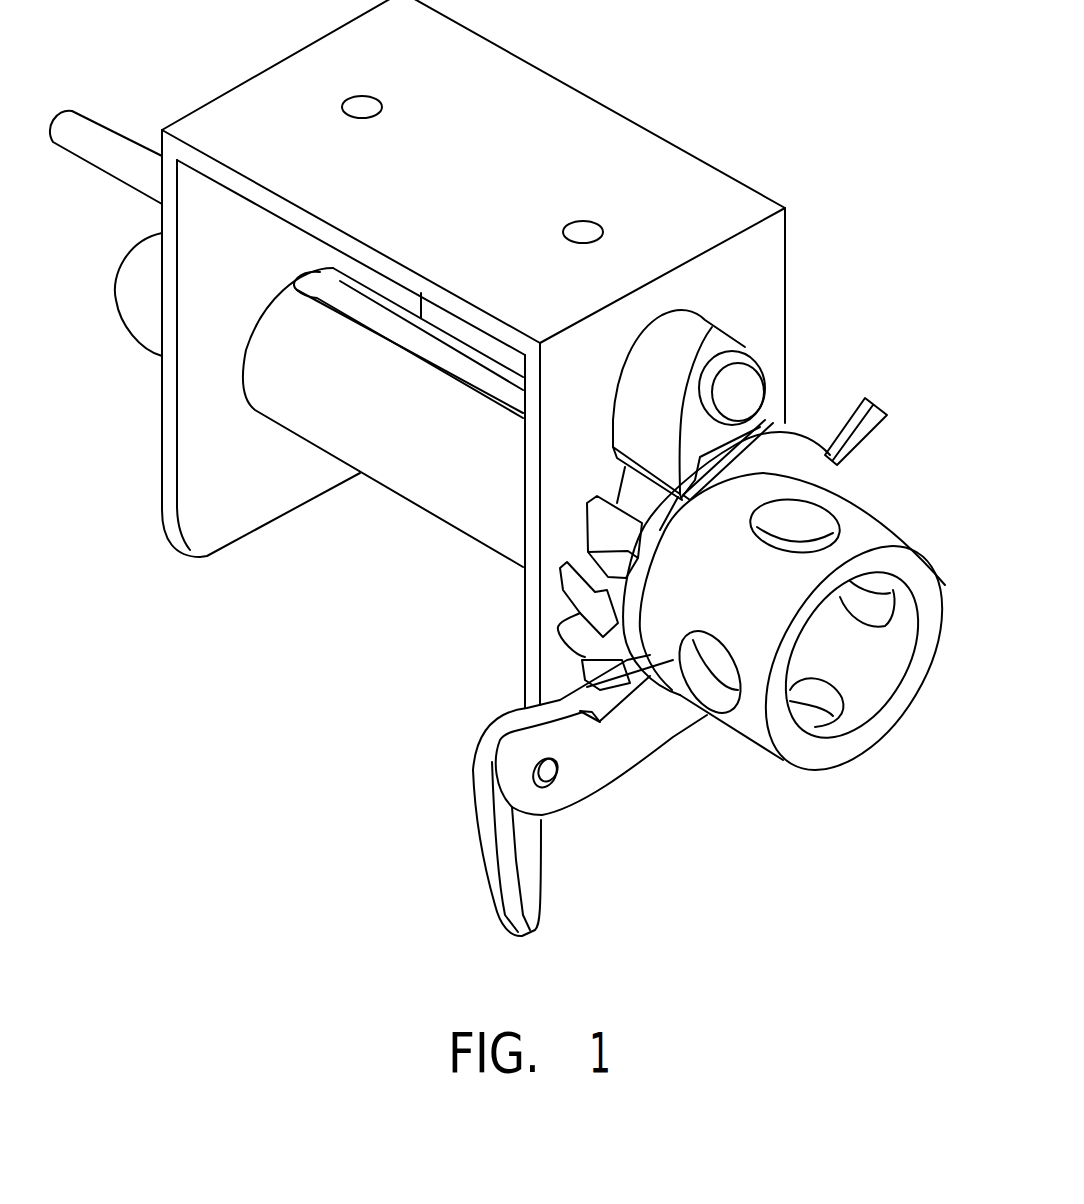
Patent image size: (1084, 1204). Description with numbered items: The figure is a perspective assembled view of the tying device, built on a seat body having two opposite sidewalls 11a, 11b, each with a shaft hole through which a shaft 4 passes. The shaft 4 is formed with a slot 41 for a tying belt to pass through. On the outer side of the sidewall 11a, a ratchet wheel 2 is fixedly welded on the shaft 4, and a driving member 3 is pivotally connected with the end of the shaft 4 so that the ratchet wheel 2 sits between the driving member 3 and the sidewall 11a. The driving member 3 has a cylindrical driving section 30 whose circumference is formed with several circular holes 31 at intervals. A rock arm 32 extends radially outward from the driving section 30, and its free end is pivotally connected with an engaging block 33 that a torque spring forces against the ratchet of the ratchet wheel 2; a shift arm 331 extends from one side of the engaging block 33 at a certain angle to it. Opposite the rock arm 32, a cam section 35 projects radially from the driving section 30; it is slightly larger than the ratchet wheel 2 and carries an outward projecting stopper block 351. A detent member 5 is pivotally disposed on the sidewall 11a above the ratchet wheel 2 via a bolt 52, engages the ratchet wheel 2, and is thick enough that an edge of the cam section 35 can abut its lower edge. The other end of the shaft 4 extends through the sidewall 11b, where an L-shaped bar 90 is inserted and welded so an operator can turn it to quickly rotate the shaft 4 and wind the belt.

The ratchet wheel 2 is at (591, 597).
The driving member 3 is at (745, 630).
The shaft 4 is at (492, 487).
The detent member 5 is at (728, 325).
The sidewall 11a is at (742, 268).
The sidewall 11b is at (208, 430).
The driving section 30 is at (847, 547).
The circular holes 31 is at (795, 517).
The rock arm 32 is at (637, 731).
The engaging block 33 is at (560, 710).
The cam section 35 is at (800, 457).
The slot 41 is at (443, 363).
The bolt 52 is at (735, 393).
The L-shaped bar 90 is at (103, 147).
The shift arm 331 is at (522, 888).
The stopper block 351 is at (873, 427).